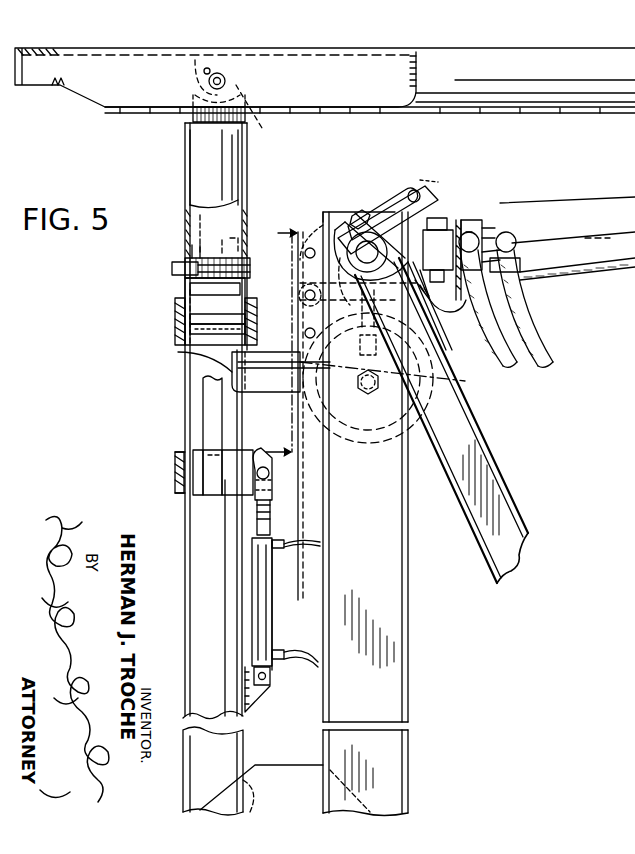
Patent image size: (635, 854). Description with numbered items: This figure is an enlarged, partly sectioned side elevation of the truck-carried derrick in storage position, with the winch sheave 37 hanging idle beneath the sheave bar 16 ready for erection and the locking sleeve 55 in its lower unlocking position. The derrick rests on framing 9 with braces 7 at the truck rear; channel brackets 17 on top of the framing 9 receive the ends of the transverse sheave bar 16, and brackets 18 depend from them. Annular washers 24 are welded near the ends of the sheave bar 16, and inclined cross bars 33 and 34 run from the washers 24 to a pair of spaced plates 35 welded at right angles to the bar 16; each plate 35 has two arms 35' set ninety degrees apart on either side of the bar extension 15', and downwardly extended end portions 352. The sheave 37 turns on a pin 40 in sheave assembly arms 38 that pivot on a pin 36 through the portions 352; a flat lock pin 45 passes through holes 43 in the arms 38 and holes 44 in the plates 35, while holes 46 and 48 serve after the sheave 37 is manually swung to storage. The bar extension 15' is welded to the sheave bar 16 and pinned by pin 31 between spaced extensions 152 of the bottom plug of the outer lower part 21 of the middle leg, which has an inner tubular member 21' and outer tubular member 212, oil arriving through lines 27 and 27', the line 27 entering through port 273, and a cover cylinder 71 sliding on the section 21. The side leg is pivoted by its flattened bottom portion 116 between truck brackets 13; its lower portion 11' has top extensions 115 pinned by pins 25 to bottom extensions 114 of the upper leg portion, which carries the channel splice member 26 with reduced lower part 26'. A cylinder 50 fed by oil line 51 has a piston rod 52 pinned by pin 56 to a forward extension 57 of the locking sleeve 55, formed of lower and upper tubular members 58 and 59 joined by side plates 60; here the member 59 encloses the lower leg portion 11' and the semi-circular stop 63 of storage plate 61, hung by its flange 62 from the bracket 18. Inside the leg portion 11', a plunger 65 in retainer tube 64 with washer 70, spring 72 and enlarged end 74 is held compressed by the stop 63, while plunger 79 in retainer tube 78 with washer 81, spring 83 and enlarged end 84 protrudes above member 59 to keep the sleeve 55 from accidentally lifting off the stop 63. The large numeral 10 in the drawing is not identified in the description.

The braces 7 is at (512, 492).
The framing 9 is at (396, 614).
The assembly 10 is at (458, 266).
The lower portion of side leg 11' is at (194, 421).
The bottom extensions 114 is at (245, 116).
The top extensions 115 is at (192, 114).
The flattened bottom portion 116 is at (178, 805).
The truck brackets 13 is at (268, 768).
The bar extension 15' is at (464, 234).
The spaced extensions 152 is at (440, 228).
The sheave bar 16 is at (360, 232).
The channel brackets 17 is at (352, 225).
The brackets 18 is at (396, 378).
The outer lower part of middle leg 21 is at (496, 219).
The inner tubular member 21' is at (549, 234).
The outer tubular member 212 is at (486, 228).
The annular washers 24 is at (328, 228).
The pins 25 is at (206, 80).
The splice member 26 is at (325, 85).
The lower reduced part of sleeve 26' is at (42, 114).
The oil line 27 is at (505, 323).
The oil line 27' is at (542, 310).
The port 273 is at (470, 232).
The pin 31 is at (415, 190).
The inclined cross bar 33 is at (392, 230).
The inclined cross bar 34 is at (452, 314).
The sheave bar plates 35 is at (388, 204).
The arms of plates 35' is at (497, 213).
The end portions of plates 352 is at (308, 250).
The pin 36 is at (304, 297).
The sheave 37 is at (363, 445).
The sheave assembly arms 38 is at (298, 280).
The pin 40 is at (368, 395).
The holes 43 is at (372, 295).
The holes 44 is at (450, 352).
The lock pin 45 is at (432, 300).
The holes 46 is at (305, 250).
The holes 48 is at (305, 337).
The cylinder 50 is at (265, 575).
The oil line 51 is at (318, 665).
The piston rod 52 is at (270, 540).
The locking sleeve 55 is at (166, 474).
The pin 56 is at (262, 472).
The forward extension 57 is at (259, 455).
The tubular lower member 58 is at (175, 492).
The tubular upper member 59 is at (190, 329).
The side plates 60 is at (203, 402).
The storage plate 61 is at (282, 392).
The flange 62 is at (312, 372).
The semi-circular formation 63 is at (232, 365).
The retainer tube 64 is at (190, 293).
The plunger 65 is at (190, 316).
The washer 70 is at (175, 320).
The cover cylinder 71 is at (503, 235).
The compression spring 72 is at (222, 335).
The enlarged outer end portion 74 is at (215, 311).
The retainer tube 78 is at (190, 232).
The plunger 79 is at (214, 255).
The washer 81 is at (240, 268).
The compression spring 83 is at (190, 250).
The enlarged outer end portion 84 is at (172, 268).